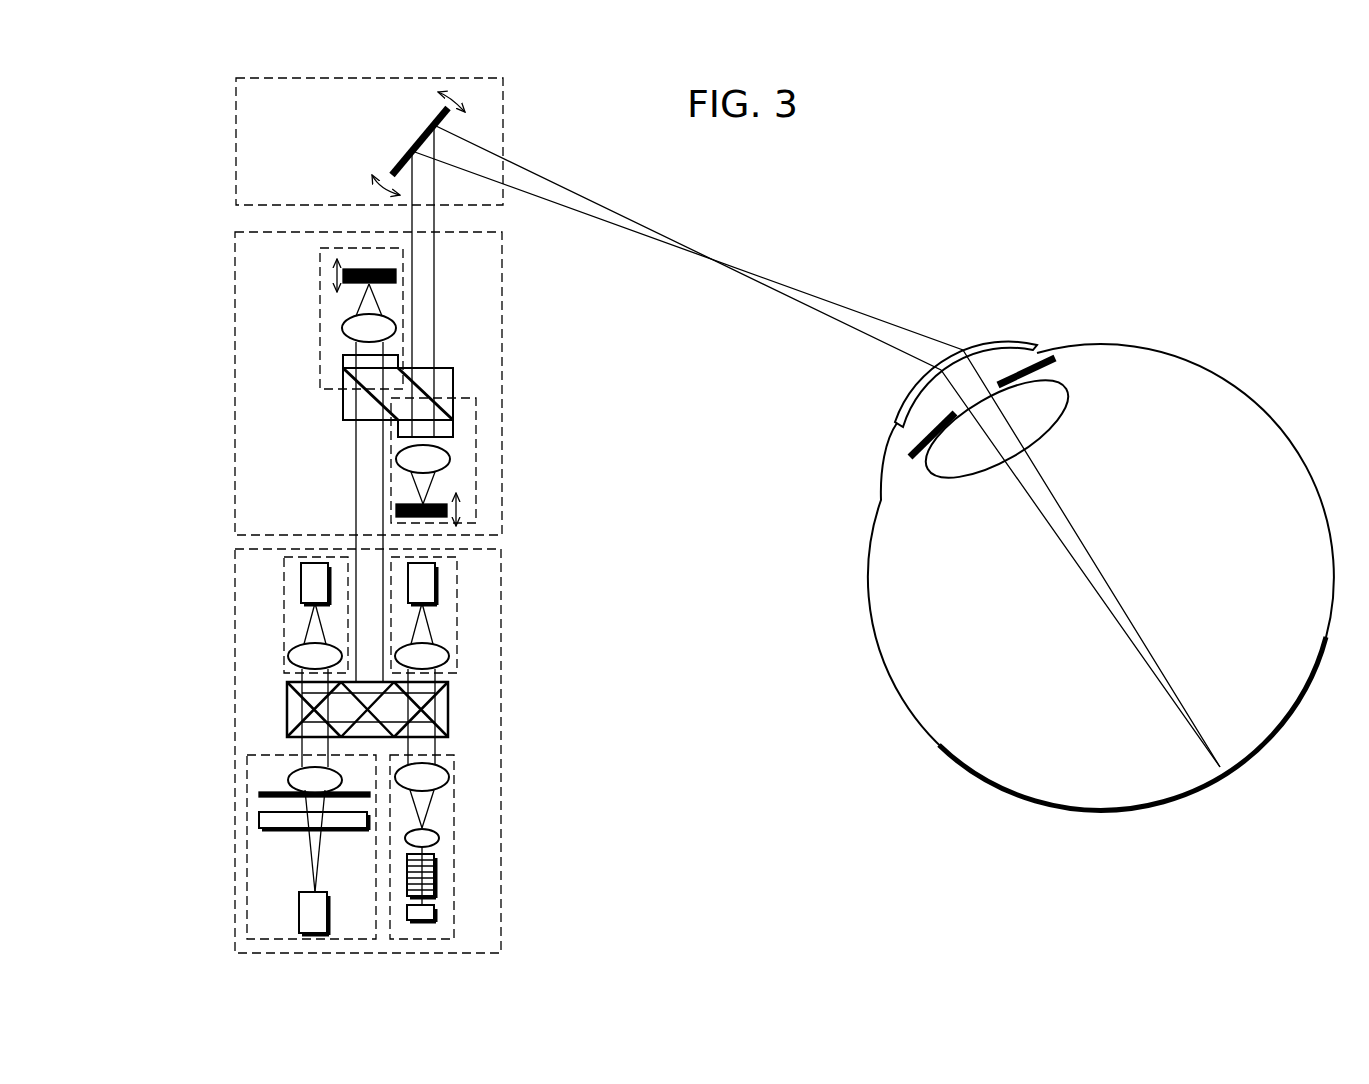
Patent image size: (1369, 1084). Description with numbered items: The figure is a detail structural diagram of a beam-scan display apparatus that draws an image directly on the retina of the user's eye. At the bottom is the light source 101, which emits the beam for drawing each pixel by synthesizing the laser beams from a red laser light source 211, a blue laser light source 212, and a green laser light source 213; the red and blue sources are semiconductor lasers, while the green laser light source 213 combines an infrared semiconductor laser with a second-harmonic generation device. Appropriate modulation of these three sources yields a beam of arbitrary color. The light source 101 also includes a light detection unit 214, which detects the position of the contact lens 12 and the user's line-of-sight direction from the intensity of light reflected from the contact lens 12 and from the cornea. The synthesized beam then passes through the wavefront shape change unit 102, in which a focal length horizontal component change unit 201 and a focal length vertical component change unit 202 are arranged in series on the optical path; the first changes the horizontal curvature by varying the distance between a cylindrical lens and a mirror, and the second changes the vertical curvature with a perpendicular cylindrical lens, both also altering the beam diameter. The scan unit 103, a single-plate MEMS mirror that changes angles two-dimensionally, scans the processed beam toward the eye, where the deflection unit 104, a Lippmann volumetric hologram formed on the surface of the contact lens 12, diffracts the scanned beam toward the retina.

The contact lens 12 is at (1013, 337).
The light source 101 is at (344, 751).
The wavefront shape change unit 102 is at (344, 383).
The scan unit 103 is at (233, 135).
The deflection unit 104 is at (943, 347).
The focal length horizontal component change unit 201 is at (313, 351).
The focal length vertical component change unit 202 is at (477, 471).
The red laser light source 211 is at (282, 618).
The blue laser light source 212 is at (458, 623).
The green laser light source 213 is at (458, 797).
The light detection unit 214 is at (245, 808).